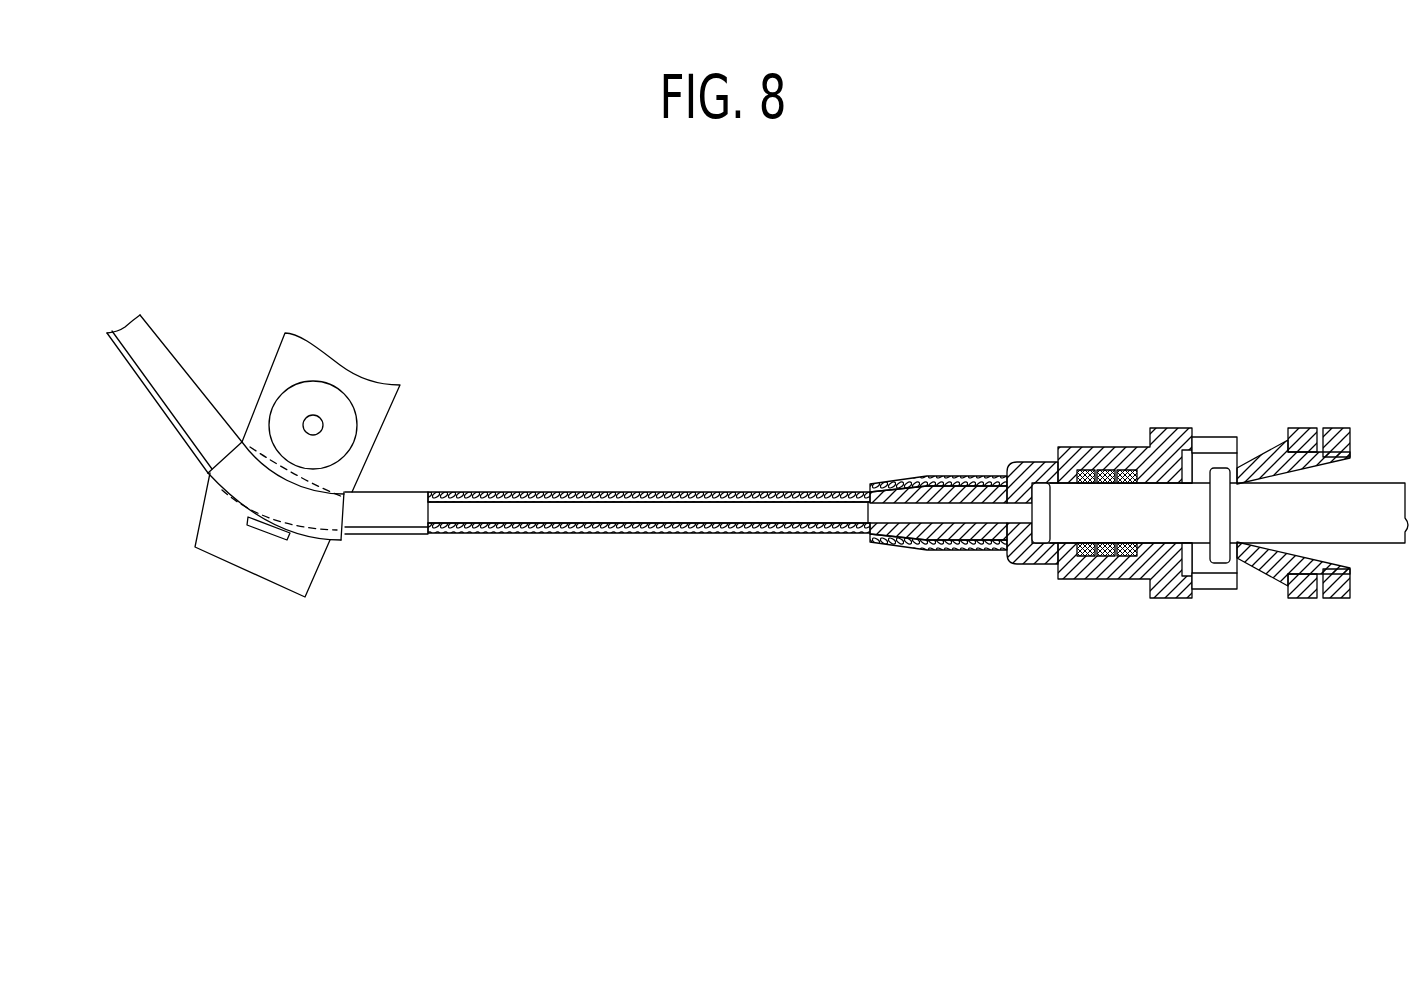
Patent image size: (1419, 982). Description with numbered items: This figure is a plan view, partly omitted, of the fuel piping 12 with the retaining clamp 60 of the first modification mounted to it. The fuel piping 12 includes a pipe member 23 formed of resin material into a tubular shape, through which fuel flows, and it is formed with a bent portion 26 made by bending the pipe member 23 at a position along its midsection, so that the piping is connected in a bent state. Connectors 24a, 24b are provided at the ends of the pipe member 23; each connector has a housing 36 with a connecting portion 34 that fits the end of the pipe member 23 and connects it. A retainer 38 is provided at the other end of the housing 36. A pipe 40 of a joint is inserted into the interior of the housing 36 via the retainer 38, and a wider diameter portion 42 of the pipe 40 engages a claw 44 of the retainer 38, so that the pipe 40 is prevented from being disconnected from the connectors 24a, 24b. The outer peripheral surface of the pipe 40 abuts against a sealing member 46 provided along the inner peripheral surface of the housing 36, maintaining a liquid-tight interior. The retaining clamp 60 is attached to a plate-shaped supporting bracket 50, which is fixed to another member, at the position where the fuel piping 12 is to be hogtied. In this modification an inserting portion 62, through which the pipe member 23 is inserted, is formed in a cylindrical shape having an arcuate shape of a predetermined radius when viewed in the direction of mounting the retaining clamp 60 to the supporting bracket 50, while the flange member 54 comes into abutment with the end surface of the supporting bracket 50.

The fuel piping 12 is at (625, 489).
The pipe member 23 is at (663, 535).
The connector 24a is at (1172, 427).
The connector 24b is at (1183, 460).
The bent portion 26 is at (317, 513).
The connecting portion 34 is at (950, 483).
The housing 36 is at (1023, 557).
The retainer 38 is at (1350, 432).
The pipe 40 is at (1377, 530).
The wider diameter portion 42 is at (1213, 565).
The claw 44 is at (1247, 437).
The sealing member 46 is at (1112, 557).
The supporting bracket 50 is at (247, 558).
The flange member 54 is at (287, 402).
The retaining clamp 60 is at (358, 398).
The inserting portion 62 is at (236, 481).